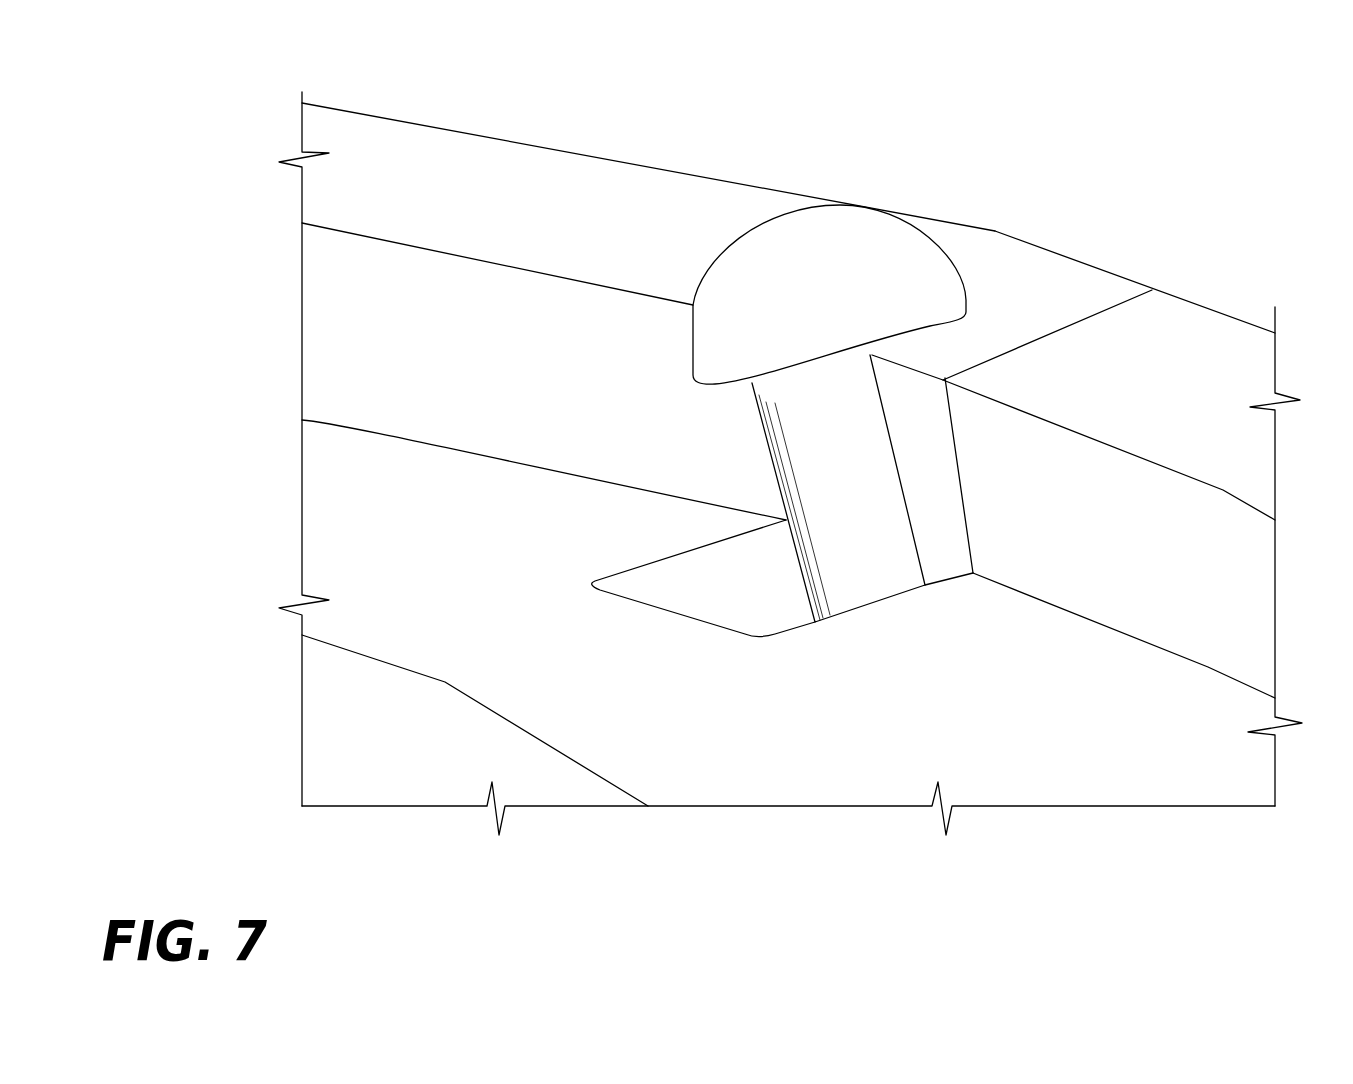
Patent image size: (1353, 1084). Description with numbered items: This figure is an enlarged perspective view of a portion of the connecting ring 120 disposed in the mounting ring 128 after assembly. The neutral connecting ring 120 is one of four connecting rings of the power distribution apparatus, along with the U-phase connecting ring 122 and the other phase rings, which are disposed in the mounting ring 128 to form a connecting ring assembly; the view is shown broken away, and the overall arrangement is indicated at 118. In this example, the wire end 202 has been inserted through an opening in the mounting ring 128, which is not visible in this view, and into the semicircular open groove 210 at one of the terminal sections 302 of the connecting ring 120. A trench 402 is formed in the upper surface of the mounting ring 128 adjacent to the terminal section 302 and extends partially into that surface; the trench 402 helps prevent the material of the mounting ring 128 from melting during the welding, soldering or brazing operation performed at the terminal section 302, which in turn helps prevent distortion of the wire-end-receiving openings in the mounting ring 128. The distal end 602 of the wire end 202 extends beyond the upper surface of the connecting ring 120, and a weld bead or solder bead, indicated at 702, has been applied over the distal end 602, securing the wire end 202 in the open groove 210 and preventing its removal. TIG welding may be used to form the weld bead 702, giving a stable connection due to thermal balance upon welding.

The seat track assembly 118 is at (196, 95).
The neutral connecting ring 120 is at (590, 154).
The U-phase connecting ring 122 is at (502, 714).
The mounting ring 128 is at (302, 535).
The wire end 202 is at (790, 543).
The open groove 210 is at (884, 423).
The terminal section 302 is at (1053, 249).
The trench 402 is at (773, 633).
The distal end 602 is at (799, 369).
The weld bead 702 is at (790, 212).